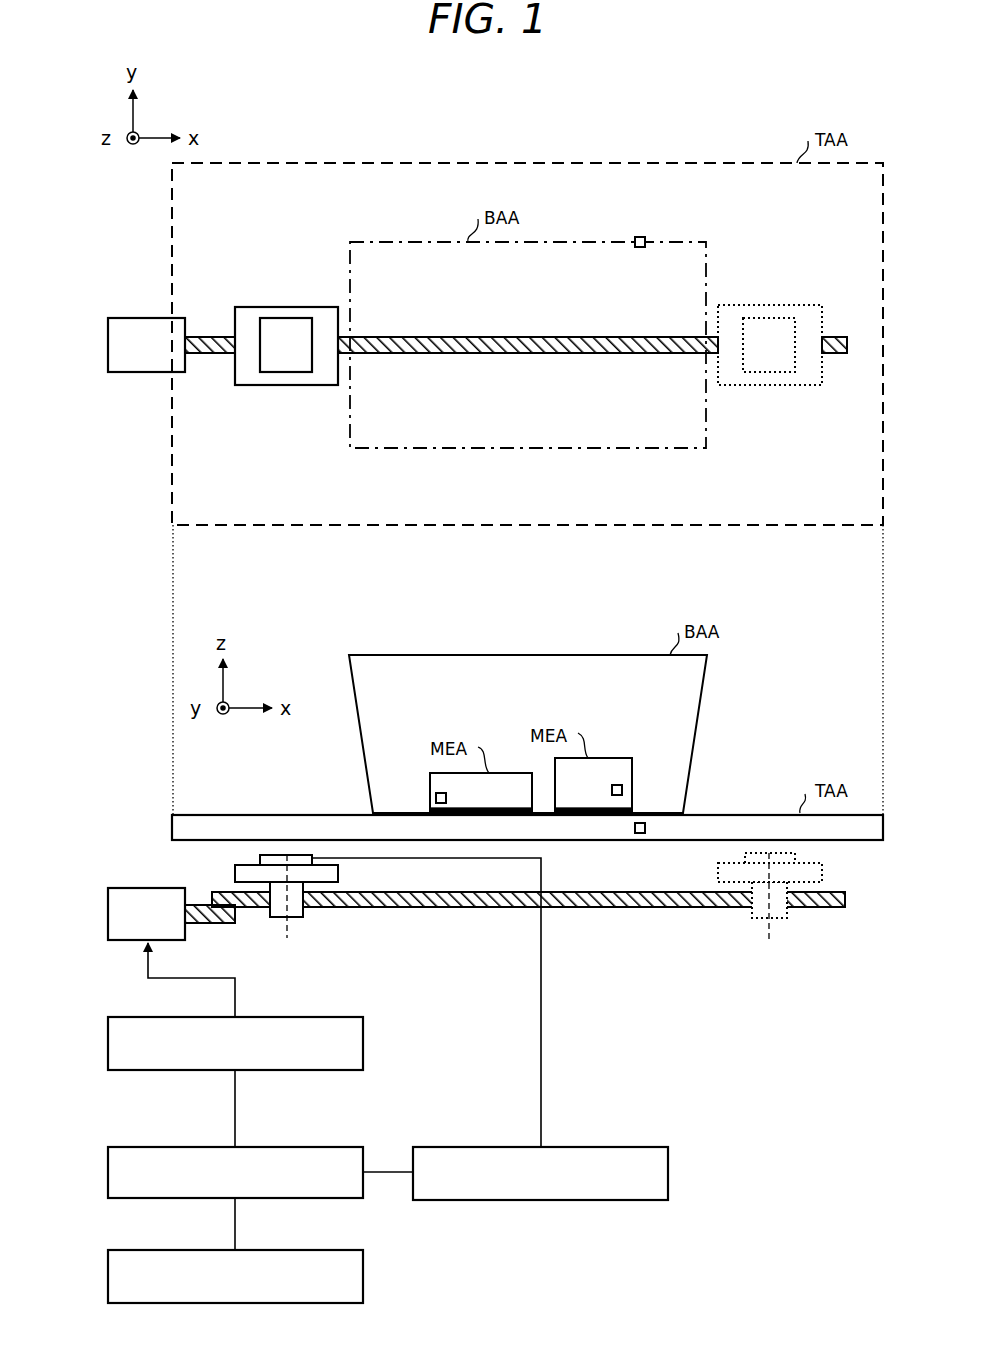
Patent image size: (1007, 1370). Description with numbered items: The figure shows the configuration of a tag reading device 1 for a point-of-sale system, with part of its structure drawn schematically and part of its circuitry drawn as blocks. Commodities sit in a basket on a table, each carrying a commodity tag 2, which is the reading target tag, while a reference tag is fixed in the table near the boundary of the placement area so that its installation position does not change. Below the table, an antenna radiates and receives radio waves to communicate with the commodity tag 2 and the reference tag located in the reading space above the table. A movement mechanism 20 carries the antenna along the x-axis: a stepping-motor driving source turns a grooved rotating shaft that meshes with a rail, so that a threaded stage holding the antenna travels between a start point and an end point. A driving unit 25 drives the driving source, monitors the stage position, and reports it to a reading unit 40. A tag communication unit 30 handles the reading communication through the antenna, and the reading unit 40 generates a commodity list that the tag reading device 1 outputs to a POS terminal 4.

The tag reading device 1 is at (648, 992).
The commodity tag 2 is at (434, 793).
The POS terminal 4 is at (313, 1250).
The movement mechanism 20 is at (130, 833).
The driving unit 25 is at (317, 1017).
The tag communication unit 30 is at (618, 1147).
The reading unit 40 is at (313, 1147).